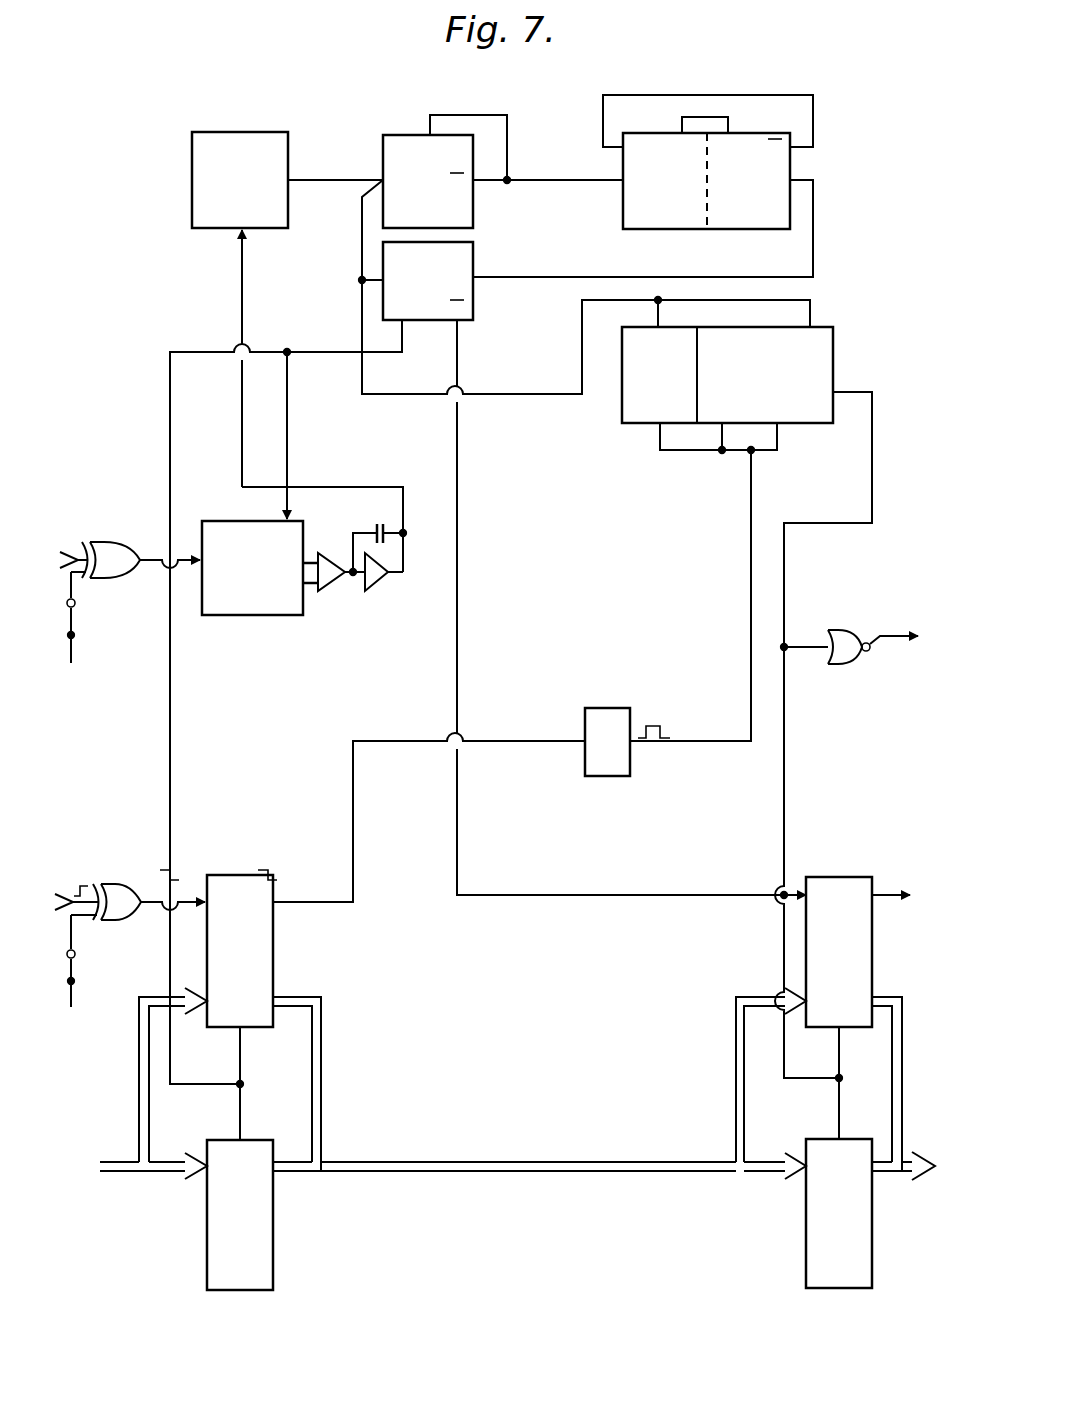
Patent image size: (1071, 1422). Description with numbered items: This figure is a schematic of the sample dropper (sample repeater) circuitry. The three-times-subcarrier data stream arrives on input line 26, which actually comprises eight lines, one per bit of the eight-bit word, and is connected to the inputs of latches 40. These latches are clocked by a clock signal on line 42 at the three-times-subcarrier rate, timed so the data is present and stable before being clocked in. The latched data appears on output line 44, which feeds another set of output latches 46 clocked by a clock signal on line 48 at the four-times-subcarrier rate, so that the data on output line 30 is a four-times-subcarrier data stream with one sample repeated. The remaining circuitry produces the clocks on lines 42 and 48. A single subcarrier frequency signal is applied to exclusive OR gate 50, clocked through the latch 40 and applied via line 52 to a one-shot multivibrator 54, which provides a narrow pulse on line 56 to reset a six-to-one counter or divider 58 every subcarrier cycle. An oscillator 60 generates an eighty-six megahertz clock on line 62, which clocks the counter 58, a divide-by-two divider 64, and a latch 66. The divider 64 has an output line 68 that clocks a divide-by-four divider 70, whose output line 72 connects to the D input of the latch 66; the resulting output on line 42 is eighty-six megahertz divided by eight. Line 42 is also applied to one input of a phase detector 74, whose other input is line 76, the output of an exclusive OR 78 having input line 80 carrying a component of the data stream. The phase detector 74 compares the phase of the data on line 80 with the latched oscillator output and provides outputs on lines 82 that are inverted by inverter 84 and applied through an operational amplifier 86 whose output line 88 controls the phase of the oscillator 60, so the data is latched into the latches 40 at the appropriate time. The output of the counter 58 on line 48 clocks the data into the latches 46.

The input line 26 is at (160, 1172).
The output line 30 is at (902, 1084).
The latches 40 is at (273, 953).
The clock line 42 is at (397, 355).
The output line 44 is at (388, 1162).
The output latches 46 is at (872, 966).
The clock line 48 is at (872, 471).
The exclusive OR gate 50 is at (107, 884).
The line 52 is at (515, 739).
The one-shot multivibrator 54 is at (612, 776).
The line 56 is at (751, 613).
The 6-to-1 counter or divider 58 is at (633, 423).
The oscillator 60 is at (192, 182).
The line 62 is at (336, 184).
The divide by 2 divider 64 is at (473, 200).
The latch 66 is at (473, 311).
The output line 68 is at (580, 182).
The divide by 4 divider 70 is at (660, 229).
The output line 72 is at (813, 226).
The phase detector 74 is at (250, 615).
The line 76 is at (153, 565).
The exclusive OR 78 is at (118, 542).
The input line 80 is at (88, 546).
The lines 82 is at (310, 556).
The inverter 84 is at (335, 588).
The operational amplifier 86 is at (375, 588).
The output line 88 is at (350, 485).